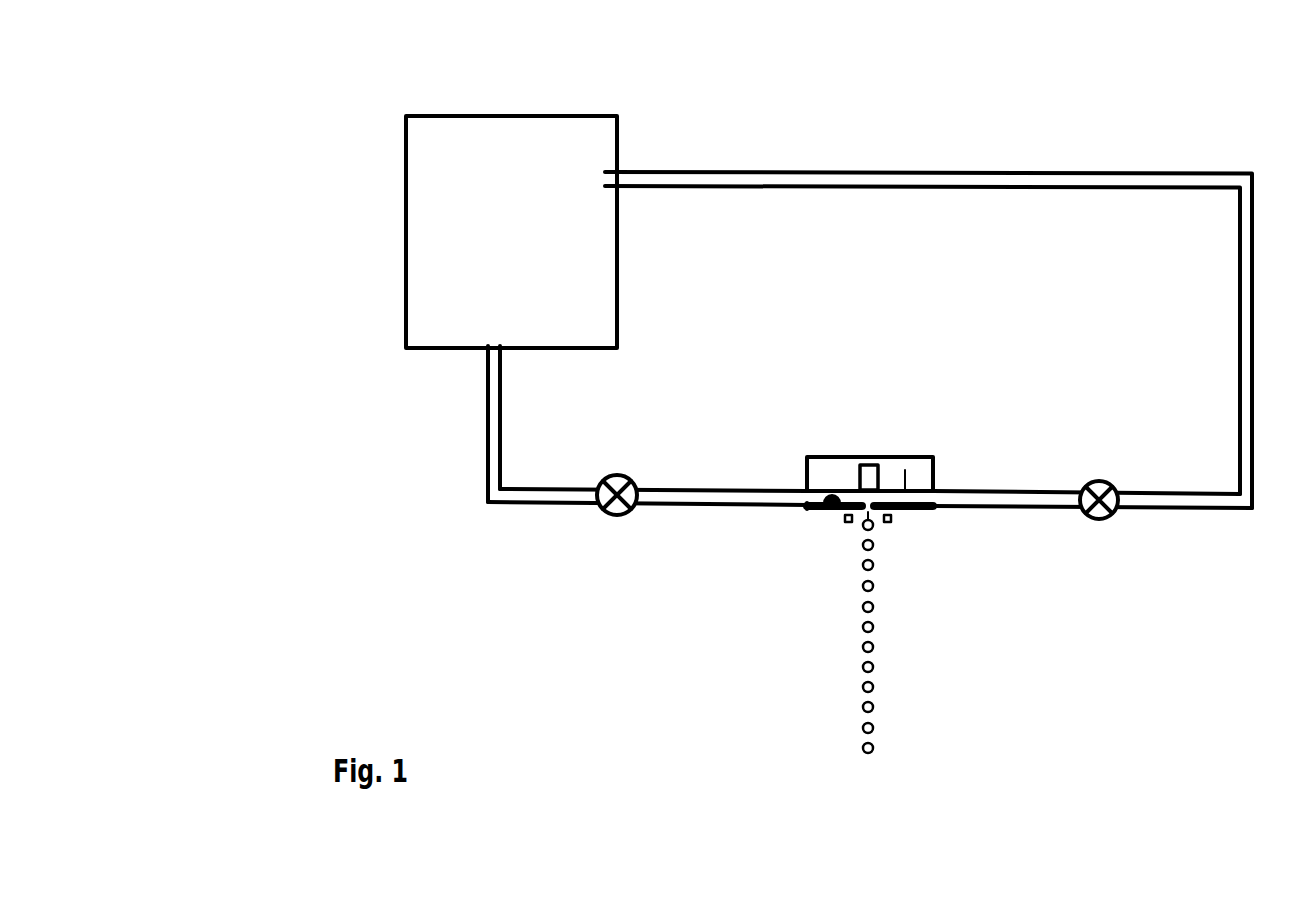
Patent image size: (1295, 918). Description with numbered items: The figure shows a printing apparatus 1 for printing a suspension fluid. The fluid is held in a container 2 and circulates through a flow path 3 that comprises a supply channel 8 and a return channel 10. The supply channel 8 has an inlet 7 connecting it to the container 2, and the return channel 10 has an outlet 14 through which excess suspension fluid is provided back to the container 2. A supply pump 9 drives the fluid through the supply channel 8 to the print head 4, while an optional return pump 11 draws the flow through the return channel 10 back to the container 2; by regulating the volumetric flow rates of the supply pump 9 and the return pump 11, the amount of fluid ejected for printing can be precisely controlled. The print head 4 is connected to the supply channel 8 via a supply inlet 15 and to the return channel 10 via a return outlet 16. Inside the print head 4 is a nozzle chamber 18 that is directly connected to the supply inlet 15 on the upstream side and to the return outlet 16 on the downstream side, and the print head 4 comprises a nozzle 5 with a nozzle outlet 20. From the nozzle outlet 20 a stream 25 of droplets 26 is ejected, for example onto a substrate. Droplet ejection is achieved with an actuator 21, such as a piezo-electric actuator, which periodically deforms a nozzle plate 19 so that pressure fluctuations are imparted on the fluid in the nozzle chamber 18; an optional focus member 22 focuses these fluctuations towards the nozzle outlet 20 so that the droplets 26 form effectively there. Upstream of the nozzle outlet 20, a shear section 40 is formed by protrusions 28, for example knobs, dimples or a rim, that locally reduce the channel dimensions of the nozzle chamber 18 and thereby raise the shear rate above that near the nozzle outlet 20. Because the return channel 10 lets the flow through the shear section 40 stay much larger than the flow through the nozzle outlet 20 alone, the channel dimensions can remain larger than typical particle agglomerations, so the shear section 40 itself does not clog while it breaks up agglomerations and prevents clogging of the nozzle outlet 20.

The printing apparatus 1 is at (1104, 114).
The container 2 is at (404, 262).
The flow path 3 is at (486, 423).
The print head 4 is at (935, 468).
The nozzle 5 is at (853, 538).
The inlet 7 is at (498, 345).
The supply channel 8 is at (540, 508).
The supply pump 9 is at (617, 516).
The return channel 10 is at (1032, 510).
The return pump 11 is at (1098, 520).
The outlet 14 is at (607, 172).
The supply inlet 15 is at (800, 512).
The return outlet 16 is at (940, 487).
The nozzle chamber 18 is at (905, 470).
The nozzle plate 19 is at (893, 516).
The nozzle outlet 20 is at (878, 522).
The actuator 21 is at (847, 524).
The focus member 22 is at (862, 470).
The stream 25 is at (903, 688).
The droplets 26 is at (877, 607).
The protrusions 28 is at (832, 494).
The shear section 40 is at (822, 526).